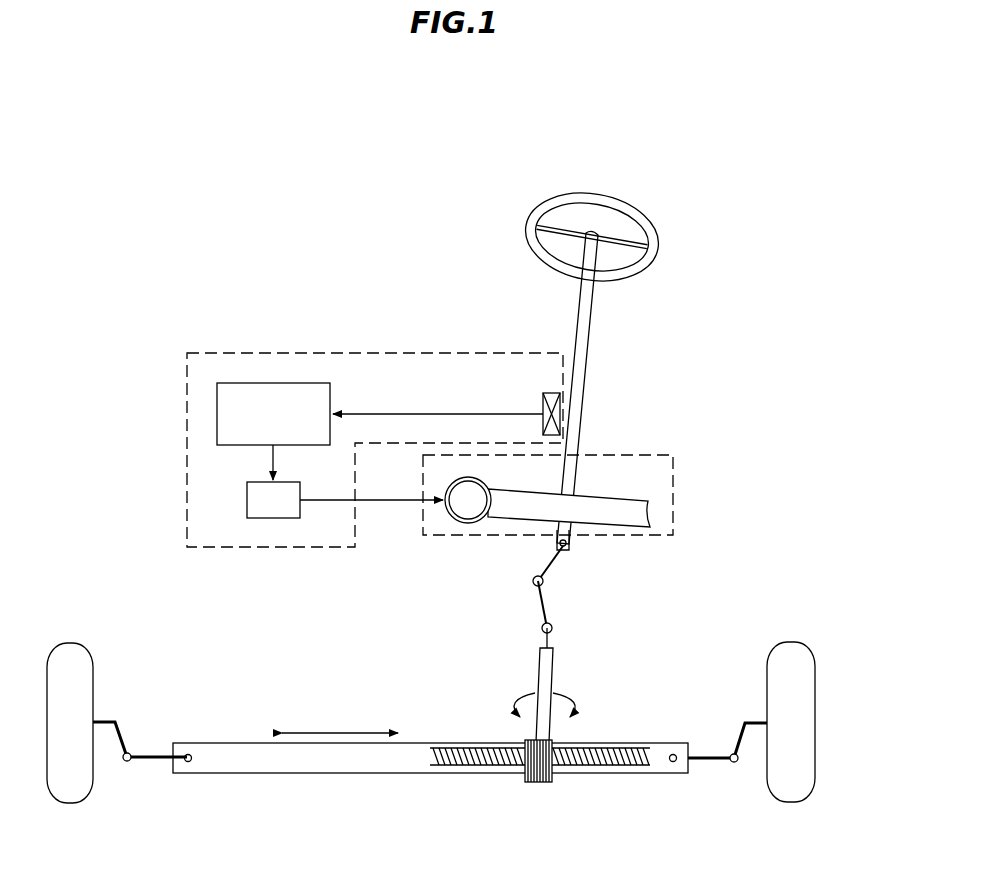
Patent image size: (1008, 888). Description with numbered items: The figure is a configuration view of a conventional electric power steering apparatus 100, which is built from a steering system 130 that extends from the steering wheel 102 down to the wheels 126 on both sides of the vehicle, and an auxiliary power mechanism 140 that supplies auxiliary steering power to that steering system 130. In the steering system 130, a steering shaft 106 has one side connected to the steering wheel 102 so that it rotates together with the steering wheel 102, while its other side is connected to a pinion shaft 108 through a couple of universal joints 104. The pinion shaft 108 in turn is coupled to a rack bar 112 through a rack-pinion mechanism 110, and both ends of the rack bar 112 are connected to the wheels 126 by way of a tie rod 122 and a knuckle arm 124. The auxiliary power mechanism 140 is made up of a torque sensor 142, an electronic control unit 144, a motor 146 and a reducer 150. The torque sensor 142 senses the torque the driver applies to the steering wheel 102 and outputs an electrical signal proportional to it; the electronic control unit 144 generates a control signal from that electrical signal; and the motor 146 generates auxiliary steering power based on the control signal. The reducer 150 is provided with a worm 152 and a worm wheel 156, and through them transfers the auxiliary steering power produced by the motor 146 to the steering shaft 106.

The electric power steering apparatus 100 is at (243, 129).
The steering wheel 102 is at (527, 223).
The universal joints 104 is at (552, 566).
The steering shaft 106 is at (588, 345).
The pinion shaft 108 is at (539, 678).
The rack-pinion mechanism 110 is at (540, 783).
The rack bar 112 is at (212, 748).
The tie rod 122 is at (714, 757).
The knuckle arm 124 is at (110, 722).
The wheels 126 is at (800, 656).
The steering system 130 is at (594, 327).
The auxiliary power mechanism 140 is at (186, 392).
The torque sensor 142 is at (541, 404).
The electronic control unit 144 is at (315, 383).
The motor 146 is at (246, 502).
The reducer 150 is at (674, 500).
The worm 152 is at (465, 510).
The worm wheel 156 is at (581, 498).